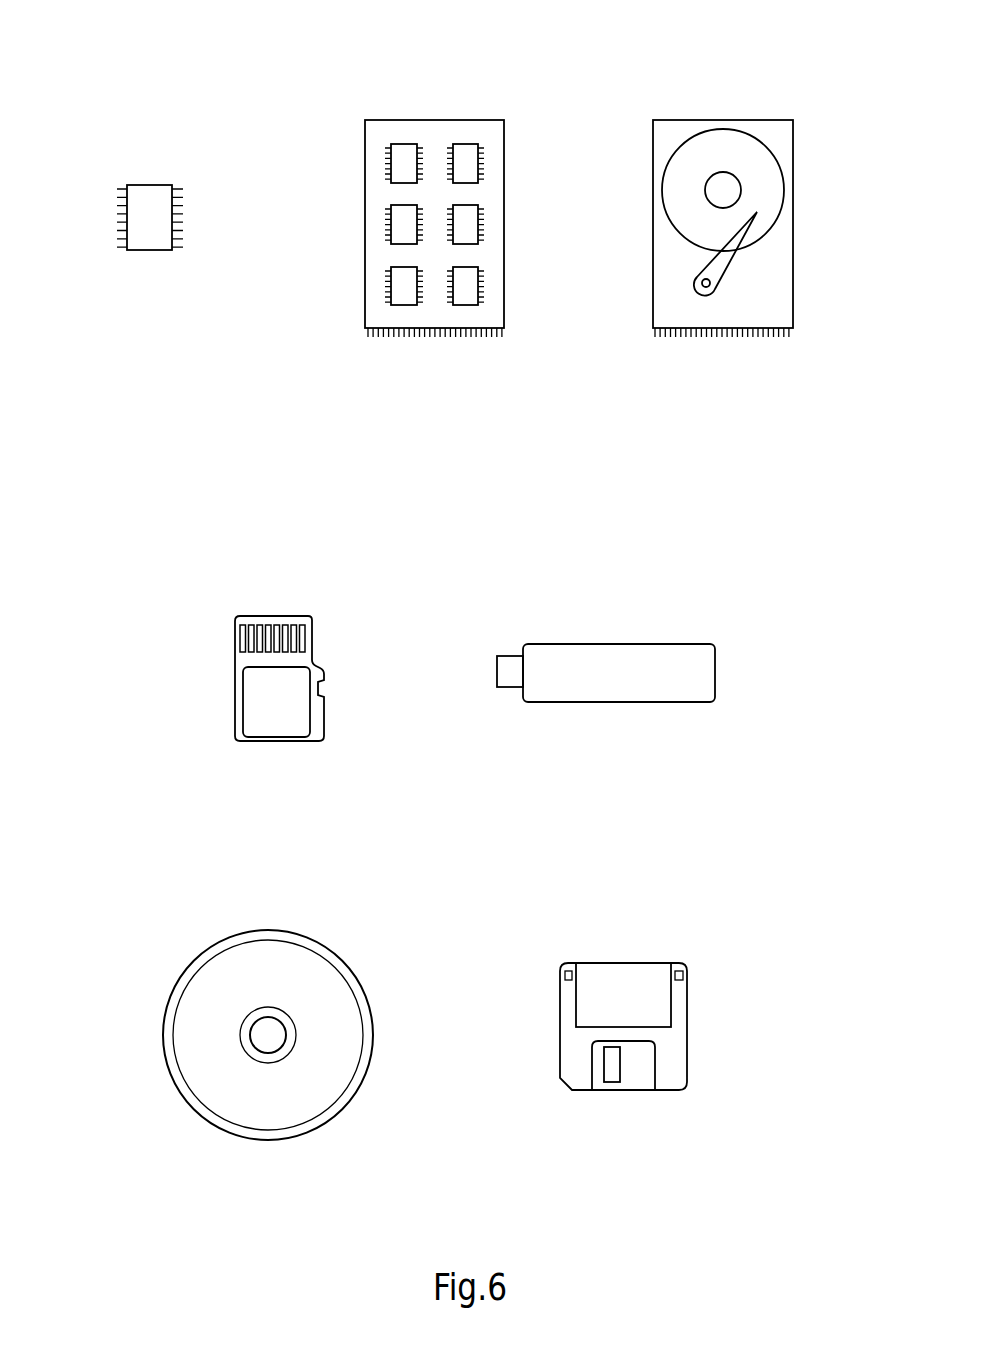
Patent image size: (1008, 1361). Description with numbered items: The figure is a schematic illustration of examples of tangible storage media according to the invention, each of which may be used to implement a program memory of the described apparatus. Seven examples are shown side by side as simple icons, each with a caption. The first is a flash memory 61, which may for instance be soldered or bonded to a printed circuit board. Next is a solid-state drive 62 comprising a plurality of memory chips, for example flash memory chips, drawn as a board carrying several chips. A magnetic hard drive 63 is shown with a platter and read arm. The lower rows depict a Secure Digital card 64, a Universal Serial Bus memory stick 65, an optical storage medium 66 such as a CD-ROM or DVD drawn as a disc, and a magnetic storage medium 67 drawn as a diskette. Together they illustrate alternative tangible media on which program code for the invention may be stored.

The flash memory 61 is at (176, 145).
The solid-state drive 62 is at (507, 83).
The magnetic hard drive 63 is at (795, 83).
The Secure Digital (SD) card 64 is at (317, 583).
The Universal Serial Bus (USB) memory stick 65 is at (690, 603).
The optical storage medium 66 is at (353, 927).
The magnetic storage medium 67 is at (682, 926).